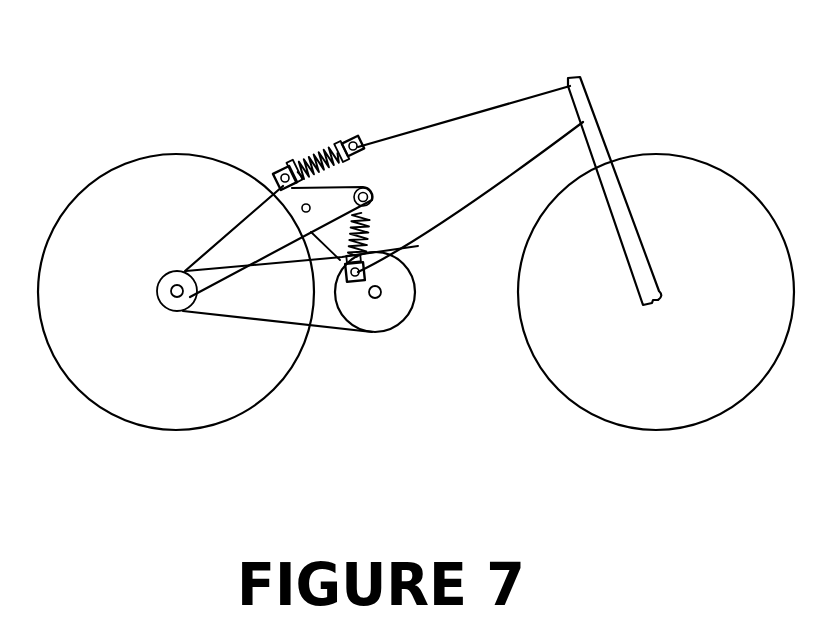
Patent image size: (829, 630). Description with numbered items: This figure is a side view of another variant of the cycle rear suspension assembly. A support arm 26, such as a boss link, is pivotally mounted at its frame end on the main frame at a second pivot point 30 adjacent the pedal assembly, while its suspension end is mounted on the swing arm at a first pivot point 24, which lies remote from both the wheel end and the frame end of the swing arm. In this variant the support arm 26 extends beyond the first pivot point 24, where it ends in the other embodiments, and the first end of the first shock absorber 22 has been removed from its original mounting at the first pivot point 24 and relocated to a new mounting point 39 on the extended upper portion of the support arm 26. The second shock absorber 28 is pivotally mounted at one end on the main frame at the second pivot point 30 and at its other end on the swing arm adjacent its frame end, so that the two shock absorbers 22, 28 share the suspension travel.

The first shock absorber 22 is at (310, 148).
The first pivot point 24 is at (302, 208).
The support arm 26 is at (328, 238).
The second shock absorber 28 is at (368, 222).
The second pivot point 30 is at (358, 278).
The mounting point 39 is at (281, 169).